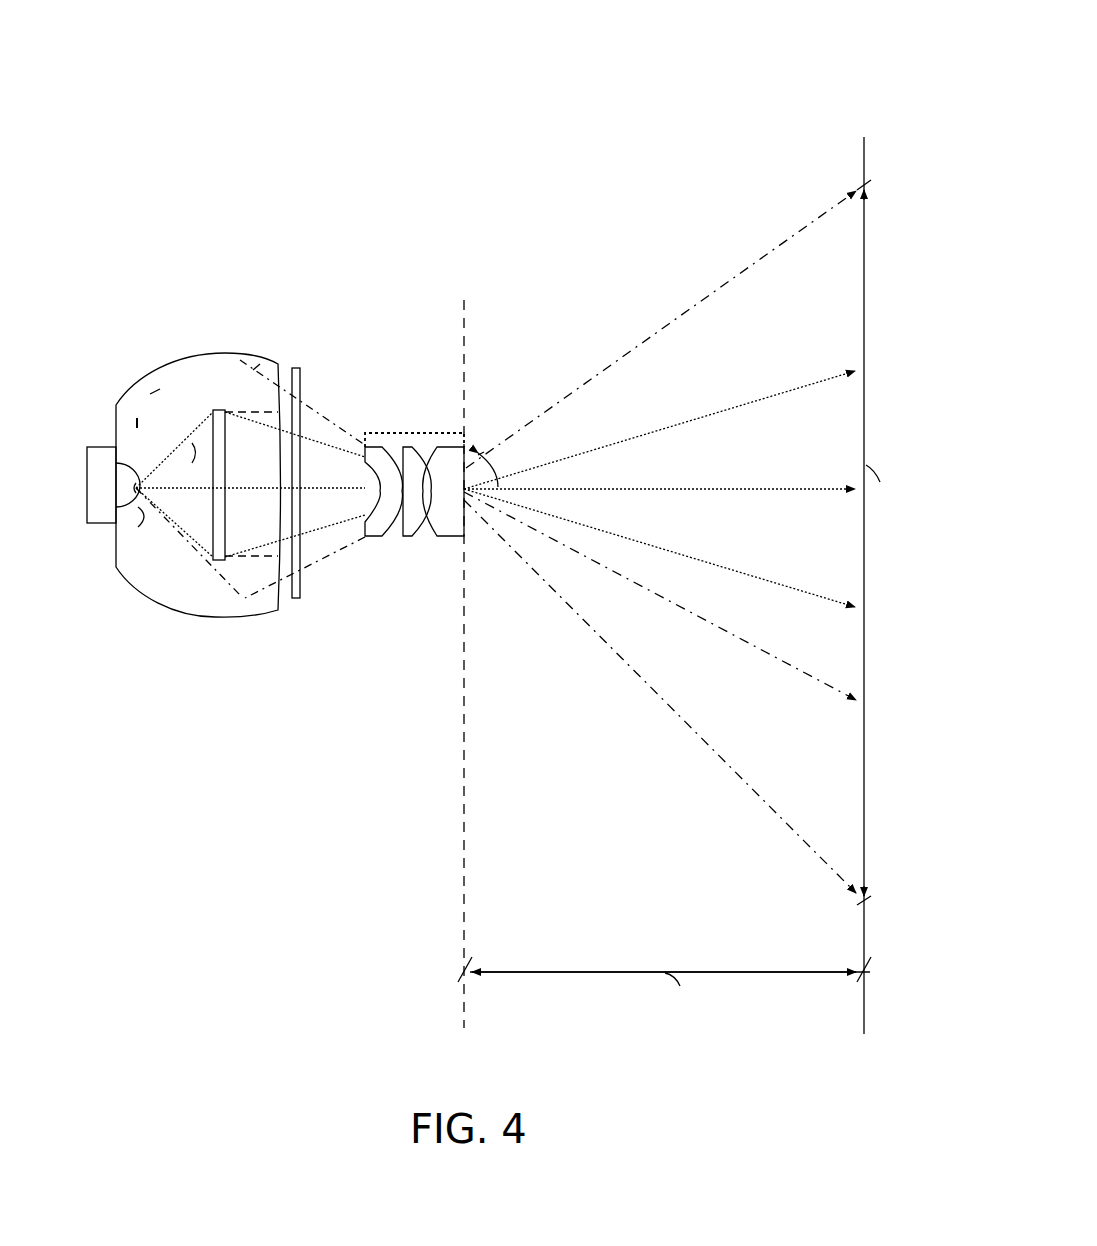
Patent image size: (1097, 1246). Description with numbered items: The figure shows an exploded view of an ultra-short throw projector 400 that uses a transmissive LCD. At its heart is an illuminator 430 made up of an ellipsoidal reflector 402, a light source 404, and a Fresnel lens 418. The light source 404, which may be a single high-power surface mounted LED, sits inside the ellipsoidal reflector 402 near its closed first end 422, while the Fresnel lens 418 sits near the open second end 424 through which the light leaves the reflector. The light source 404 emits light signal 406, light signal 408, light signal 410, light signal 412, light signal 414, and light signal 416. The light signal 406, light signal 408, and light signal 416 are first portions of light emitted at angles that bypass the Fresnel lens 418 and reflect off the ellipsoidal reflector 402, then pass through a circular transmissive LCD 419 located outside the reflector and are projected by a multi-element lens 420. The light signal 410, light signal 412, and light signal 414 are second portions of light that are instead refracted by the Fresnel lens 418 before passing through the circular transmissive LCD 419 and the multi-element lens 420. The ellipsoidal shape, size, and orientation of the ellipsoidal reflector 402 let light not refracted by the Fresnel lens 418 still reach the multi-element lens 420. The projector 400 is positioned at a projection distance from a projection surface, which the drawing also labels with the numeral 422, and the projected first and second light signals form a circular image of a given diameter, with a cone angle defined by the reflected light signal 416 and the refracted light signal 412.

The ultra-short throw projector 400 is at (896, 30).
The ellipsoidal reflector 402 is at (203, 614).
The light source 404 is at (150, 513).
The light signal 406 is at (182, 400).
The light signal 408 is at (183, 447).
The light signal 410 is at (193, 463).
The light signal 412 is at (168, 487).
The light signal 414 is at (172, 522).
The light signal 416 is at (201, 558).
The Fresnel lens 418 is at (233, 500).
The circular transmissive LCD 419 is at (293, 368).
The multi-element lens 420 is at (416, 433).
The first end 422 is at (104, 382).
The second end 424 is at (280, 660).
The illuminator 430 is at (172, 300).